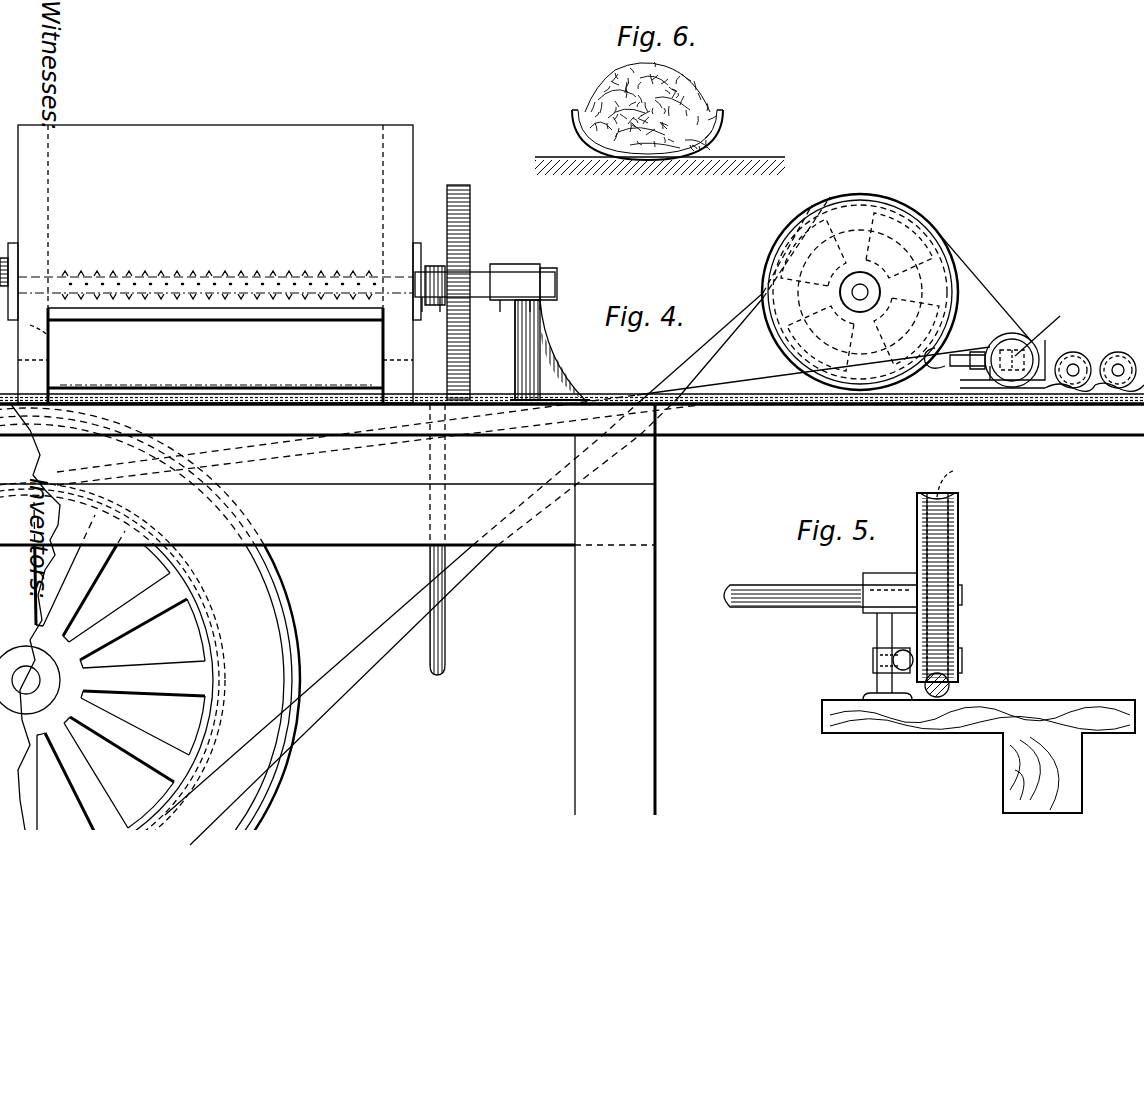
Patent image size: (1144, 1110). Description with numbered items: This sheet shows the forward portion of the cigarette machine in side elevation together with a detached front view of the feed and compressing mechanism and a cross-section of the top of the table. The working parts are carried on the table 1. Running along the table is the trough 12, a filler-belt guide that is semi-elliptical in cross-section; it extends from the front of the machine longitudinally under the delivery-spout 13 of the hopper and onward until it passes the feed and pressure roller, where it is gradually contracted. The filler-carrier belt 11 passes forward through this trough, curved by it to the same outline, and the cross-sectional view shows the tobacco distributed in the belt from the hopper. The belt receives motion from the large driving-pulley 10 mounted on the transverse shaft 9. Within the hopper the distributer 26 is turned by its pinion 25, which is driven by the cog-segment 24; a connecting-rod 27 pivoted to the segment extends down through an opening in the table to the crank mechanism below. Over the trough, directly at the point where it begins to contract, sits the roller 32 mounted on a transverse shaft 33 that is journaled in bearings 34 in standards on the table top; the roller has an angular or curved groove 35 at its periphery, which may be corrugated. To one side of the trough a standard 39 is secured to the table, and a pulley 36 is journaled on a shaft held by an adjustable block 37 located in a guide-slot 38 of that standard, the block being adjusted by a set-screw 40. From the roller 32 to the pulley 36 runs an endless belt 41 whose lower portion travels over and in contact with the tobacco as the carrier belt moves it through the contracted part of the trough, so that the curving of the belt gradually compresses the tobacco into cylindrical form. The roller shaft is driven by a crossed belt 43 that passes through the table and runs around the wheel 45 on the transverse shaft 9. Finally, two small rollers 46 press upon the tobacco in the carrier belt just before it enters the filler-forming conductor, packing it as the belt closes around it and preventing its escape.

In FIG. 5, the table 1 is at (1030, 712).
In FIG. 4, the transverse shaft 9 is at (30, 680).
In FIG. 4, the driving-pulley 10 is at (300, 600).
In FIG. 6, the filler-carrier belt 11 is at (590, 110).
In FIG. 4, the trough 12 is at (575, 392).
In FIG. 6, the trough 12 is at (723, 117).
In FIG. 4, the delivery-spout 13 is at (280, 387).
In FIG. 4, the cog-segment 24 is at (470, 232).
In FIG. 4, the pinion 25 is at (470, 273).
In FIG. 4, the distributer 26 is at (215, 273).
In FIG. 4, the connecting-rod 27 is at (450, 622).
In FIG. 4, the roller 32 is at (920, 235).
In FIG. 5, the roller 32 is at (942, 575).
In FIG. 5, the transverse shaft 33 is at (820, 585).
In FIG. 5, the bearings 34 is at (866, 615).
In FIG. 5, the groove 35 is at (956, 587).
In FIG. 4, the pulley 36 is at (1022, 342).
In FIG. 5, the pulley 36 is at (962, 652).
In FIG. 4, the adjustable block 37 is at (1070, 360).
In FIG. 4, the guide-slot 38 is at (1049, 331).
In FIG. 4, the standard 39 is at (975, 373).
In FIG. 5, the standard 39 is at (875, 690).
In FIG. 4, the set-screw 40 is at (955, 354).
In FIG. 5, the set-screw 40 is at (873, 660).
In FIG. 4, the endless belt 41 is at (972, 282).
In FIG. 5, the endless belt 41 is at (958, 479).
In FIG. 4, the crossed belt 43 is at (395, 608).
In FIG. 4, the wheel 45 is at (222, 620).
In FIG. 4, the small rollers 46 is at (1110, 352).